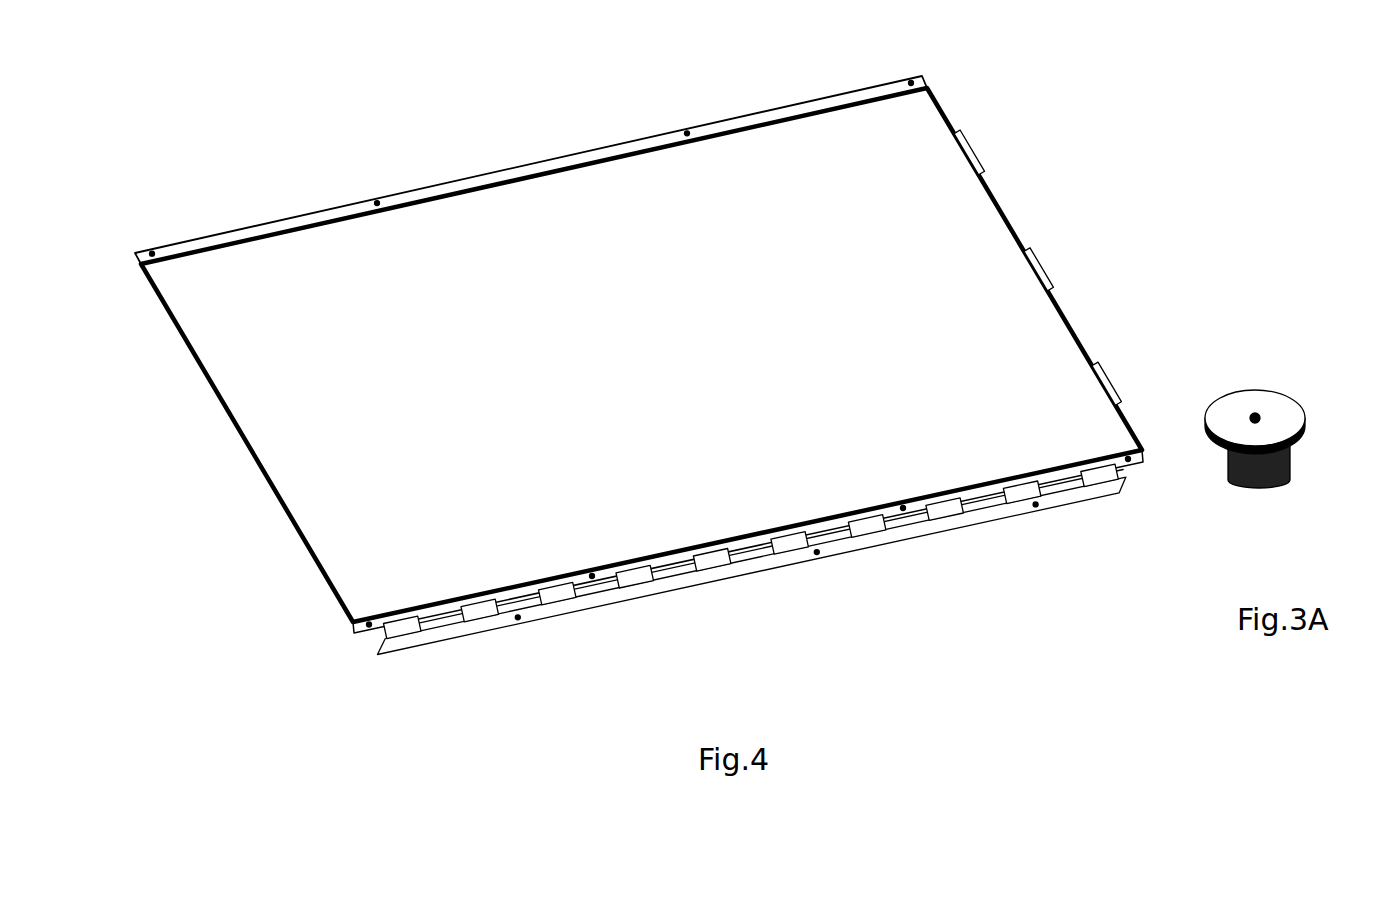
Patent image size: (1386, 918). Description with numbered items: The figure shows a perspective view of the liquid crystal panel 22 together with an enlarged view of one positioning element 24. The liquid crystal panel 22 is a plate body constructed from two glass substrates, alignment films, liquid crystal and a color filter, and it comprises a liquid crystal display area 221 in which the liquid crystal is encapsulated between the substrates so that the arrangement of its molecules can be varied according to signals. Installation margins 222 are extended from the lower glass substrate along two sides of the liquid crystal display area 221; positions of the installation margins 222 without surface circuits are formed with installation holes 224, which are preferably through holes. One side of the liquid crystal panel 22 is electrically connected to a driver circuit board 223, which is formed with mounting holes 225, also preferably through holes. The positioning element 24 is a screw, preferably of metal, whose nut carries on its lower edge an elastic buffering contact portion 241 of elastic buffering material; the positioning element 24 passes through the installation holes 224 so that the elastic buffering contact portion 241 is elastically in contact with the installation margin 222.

In FIG. 4, the liquid crystal panel 22 is at (611, 387).
In FIG. 4, the liquid crystal display area 221 is at (223, 345).
In FIG. 4, the installation margin 222 is at (263, 230).
In FIG. 4, the driver circuit board 223 is at (703, 578).
In FIG. 4, the installation holes 224 is at (377, 201).
In FIG. 4, the mounting holes 225 is at (518, 620).
In FIG. 3A, the positioning element 24 is at (1290, 419).
In FIG. 3A, the elastic buffering contact portion 241 is at (1308, 428).